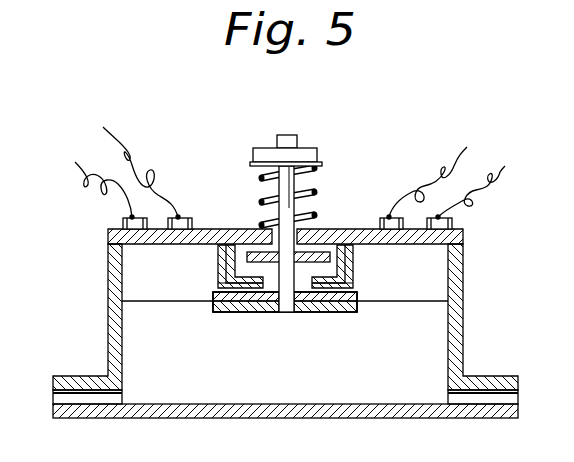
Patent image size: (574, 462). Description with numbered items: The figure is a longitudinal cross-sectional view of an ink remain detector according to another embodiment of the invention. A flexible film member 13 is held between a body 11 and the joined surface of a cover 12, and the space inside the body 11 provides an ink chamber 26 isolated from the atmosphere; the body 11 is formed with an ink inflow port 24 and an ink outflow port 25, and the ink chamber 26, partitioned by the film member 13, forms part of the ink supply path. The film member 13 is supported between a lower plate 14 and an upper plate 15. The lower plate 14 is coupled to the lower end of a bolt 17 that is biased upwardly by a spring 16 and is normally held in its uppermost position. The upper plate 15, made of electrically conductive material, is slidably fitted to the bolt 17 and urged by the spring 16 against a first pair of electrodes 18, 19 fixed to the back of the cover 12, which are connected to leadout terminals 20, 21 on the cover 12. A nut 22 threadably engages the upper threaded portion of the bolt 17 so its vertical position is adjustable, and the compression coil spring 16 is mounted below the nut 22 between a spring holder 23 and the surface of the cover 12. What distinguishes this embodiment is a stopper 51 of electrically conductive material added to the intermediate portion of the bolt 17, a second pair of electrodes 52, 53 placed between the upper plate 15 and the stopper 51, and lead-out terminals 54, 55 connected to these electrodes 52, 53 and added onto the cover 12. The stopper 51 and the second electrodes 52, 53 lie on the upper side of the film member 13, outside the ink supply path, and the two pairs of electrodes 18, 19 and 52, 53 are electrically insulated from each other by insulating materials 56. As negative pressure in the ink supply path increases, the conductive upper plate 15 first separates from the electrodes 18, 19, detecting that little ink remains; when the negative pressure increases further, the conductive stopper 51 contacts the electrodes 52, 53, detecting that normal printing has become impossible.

The body 11 is at (460, 328).
The cover 12 is at (463, 271).
The flexible film member 13 is at (138, 302).
The lower plate 14 is at (310, 309).
The upper plate 15 is at (348, 293).
The spring 16 is at (313, 189).
The bolt 17 is at (308, 206).
The electrode 18 is at (352, 315).
The electrode 19 is at (217, 314).
The leadout terminal 20 is at (452, 223).
The leadout terminal 21 is at (122, 225).
The nut 22 is at (309, 150).
The spring holder 23 is at (322, 163).
The ink inflow port 24 is at (492, 400).
The ink outflow port 25 is at (90, 399).
The ink chamber 26 is at (419, 398).
The stopper 51 is at (258, 253).
The electrode 52 is at (335, 313).
The electrode 53 is at (262, 314).
The lead-out terminal 54 is at (388, 217).
The lead-out terminal 55 is at (183, 215).
The insulating material 56 is at (243, 311).